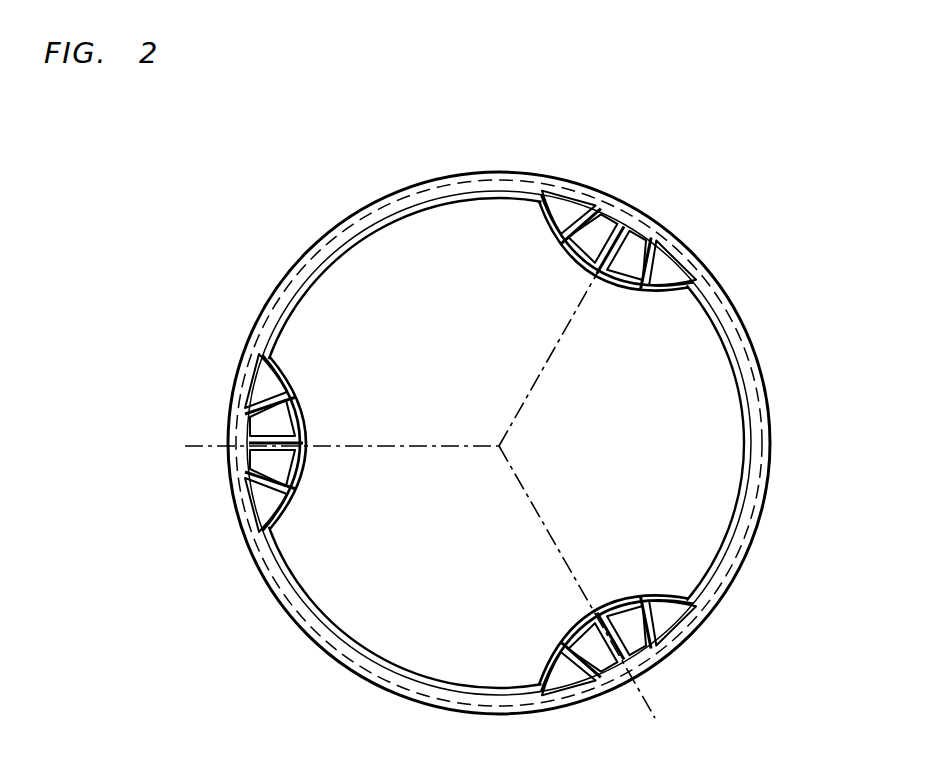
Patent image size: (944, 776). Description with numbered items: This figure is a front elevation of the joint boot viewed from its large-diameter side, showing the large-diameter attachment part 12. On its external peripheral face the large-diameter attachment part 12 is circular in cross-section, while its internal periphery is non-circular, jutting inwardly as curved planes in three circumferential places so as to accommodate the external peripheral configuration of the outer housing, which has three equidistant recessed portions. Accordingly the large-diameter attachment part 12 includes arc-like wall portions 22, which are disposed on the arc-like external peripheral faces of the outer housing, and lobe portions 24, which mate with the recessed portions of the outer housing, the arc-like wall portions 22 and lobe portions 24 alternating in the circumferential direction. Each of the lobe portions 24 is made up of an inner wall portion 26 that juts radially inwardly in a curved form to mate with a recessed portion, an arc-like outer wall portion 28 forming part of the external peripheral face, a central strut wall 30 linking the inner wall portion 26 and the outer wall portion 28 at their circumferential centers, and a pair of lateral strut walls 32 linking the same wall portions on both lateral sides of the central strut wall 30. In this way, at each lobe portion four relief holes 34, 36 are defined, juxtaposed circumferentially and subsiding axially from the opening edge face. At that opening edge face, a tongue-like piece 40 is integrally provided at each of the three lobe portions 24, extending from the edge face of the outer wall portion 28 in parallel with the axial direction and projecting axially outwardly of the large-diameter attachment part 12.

The large-diameter attachment part 12 is at (521, 146).
The arc-like wall portions 22 is at (335, 228).
The lobe portions 24 is at (478, 443).
The inner wall portion 26 is at (578, 276).
The outer wall portion 28 is at (606, 193).
The central strut wall 30 is at (582, 266).
The lateral strut walls 32 is at (582, 201).
The relief holes 34 is at (676, 610).
The relief holes 36 is at (598, 598).
The tongue-like piece 40 is at (665, 233).